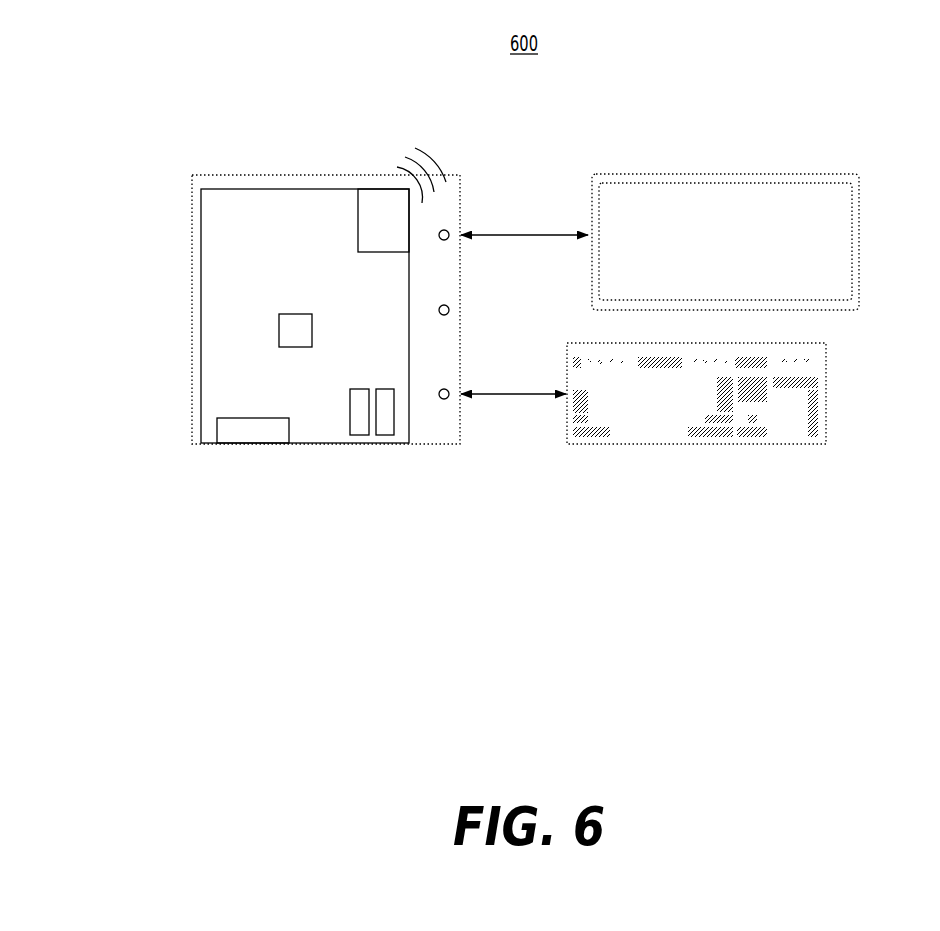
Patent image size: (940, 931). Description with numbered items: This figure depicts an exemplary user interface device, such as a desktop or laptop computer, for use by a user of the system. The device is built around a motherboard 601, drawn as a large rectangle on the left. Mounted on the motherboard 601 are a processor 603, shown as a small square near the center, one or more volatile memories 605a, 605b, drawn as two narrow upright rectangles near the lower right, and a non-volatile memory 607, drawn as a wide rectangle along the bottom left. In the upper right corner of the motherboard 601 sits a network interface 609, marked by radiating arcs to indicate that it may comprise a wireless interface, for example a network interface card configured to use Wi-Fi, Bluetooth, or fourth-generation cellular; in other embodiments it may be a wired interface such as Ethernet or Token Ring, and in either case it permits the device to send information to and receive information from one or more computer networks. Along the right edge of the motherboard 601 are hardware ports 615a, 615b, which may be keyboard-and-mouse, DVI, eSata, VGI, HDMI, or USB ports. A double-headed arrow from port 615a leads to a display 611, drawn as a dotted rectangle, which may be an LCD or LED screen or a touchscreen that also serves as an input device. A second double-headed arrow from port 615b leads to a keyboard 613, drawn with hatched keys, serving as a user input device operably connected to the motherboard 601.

The motherboard 601 is at (210, 296).
The processor 603 is at (312, 328).
The volatile memory 605a is at (360, 428).
The volatile memory 605b is at (385, 428).
The non-volatile memory 607 is at (258, 435).
The network interface 609 is at (365, 238).
The display 611 is at (647, 196).
The keyboard 613 is at (820, 370).
The port 615a is at (448, 231).
The port 615b is at (448, 390).